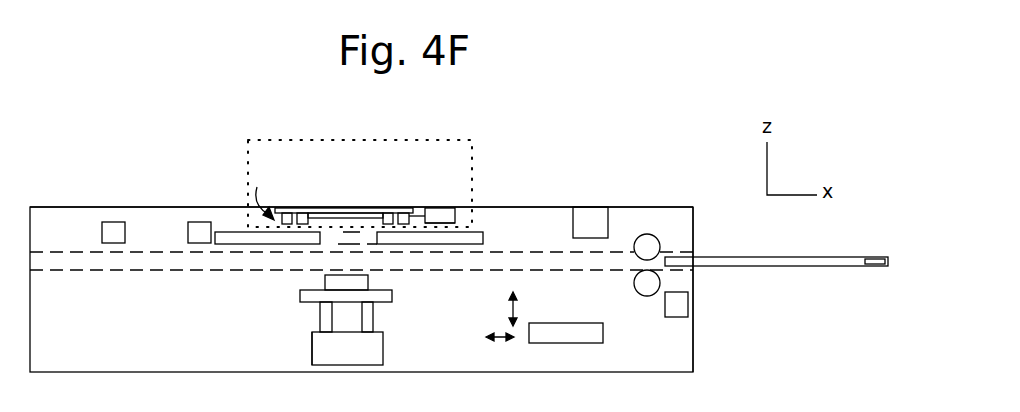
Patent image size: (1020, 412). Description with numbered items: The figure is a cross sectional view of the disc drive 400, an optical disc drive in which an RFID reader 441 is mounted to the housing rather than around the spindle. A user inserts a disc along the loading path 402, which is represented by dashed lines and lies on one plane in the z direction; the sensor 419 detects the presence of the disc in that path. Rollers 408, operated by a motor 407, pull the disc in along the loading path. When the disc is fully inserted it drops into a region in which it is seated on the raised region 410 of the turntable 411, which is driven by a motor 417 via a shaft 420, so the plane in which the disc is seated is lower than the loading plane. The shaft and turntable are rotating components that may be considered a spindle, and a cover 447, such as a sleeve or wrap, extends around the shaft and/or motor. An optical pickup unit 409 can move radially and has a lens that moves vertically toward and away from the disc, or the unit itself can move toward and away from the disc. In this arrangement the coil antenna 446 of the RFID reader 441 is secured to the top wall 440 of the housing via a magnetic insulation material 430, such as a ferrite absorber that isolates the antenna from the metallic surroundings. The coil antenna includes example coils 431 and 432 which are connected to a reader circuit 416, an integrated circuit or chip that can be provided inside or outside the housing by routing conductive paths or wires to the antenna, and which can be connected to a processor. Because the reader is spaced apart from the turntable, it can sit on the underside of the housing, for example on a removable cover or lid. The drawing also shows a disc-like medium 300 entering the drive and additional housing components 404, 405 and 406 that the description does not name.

The print medium 300 is at (777, 253).
The disc drive 400 is at (182, 166).
The loading path 402 is at (690, 247).
The sensor 404 is at (113, 222).
The sensor 405 is at (200, 222).
The support plate 406 is at (238, 231).
The motor 407 is at (598, 207).
The rollers 408 is at (643, 233).
The optical pickup unit 409 is at (544, 318).
The raised region 410 is at (370, 280).
The turntable 411 is at (392, 293).
The reader circuit 416 is at (453, 218).
The motor 417 is at (312, 350).
The sensor 419 is at (680, 318).
The shaft 420 is at (345, 332).
The magnetic insulation material 430 is at (412, 213).
The coil 431 is at (393, 213).
The coil 432 is at (407, 213).
The top wall 440 is at (525, 207).
The RFID reader 441 is at (472, 153).
The coil antenna 446 is at (277, 192).
The cover 447 is at (327, 302).